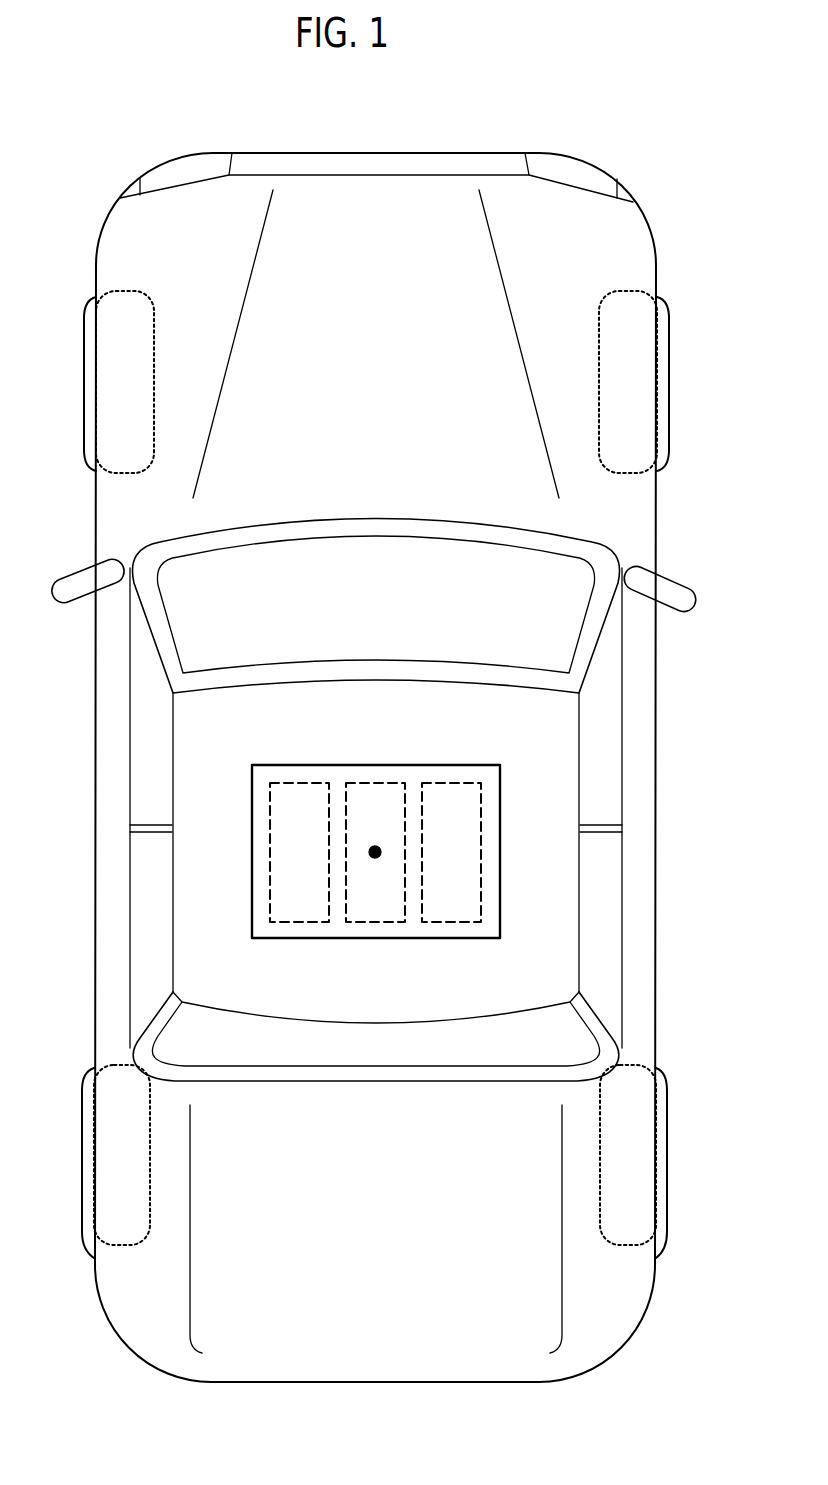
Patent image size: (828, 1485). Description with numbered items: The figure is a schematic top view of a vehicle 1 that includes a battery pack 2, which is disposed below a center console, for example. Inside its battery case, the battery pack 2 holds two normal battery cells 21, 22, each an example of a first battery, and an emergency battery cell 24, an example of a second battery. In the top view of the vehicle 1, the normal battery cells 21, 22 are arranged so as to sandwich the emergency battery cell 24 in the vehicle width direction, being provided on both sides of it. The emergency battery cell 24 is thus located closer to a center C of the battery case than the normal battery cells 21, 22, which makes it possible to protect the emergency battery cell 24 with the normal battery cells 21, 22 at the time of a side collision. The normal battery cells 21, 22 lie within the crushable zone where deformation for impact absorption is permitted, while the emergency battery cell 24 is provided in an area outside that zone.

The vehicle 1 is at (633, 158).
The battery pack 2 is at (439, 935).
The normal battery cell 21 is at (297, 778).
The emergency battery cell 24 is at (373, 778).
The normal battery cell 22 is at (449, 778).
The center of the battery case C is at (375, 858).